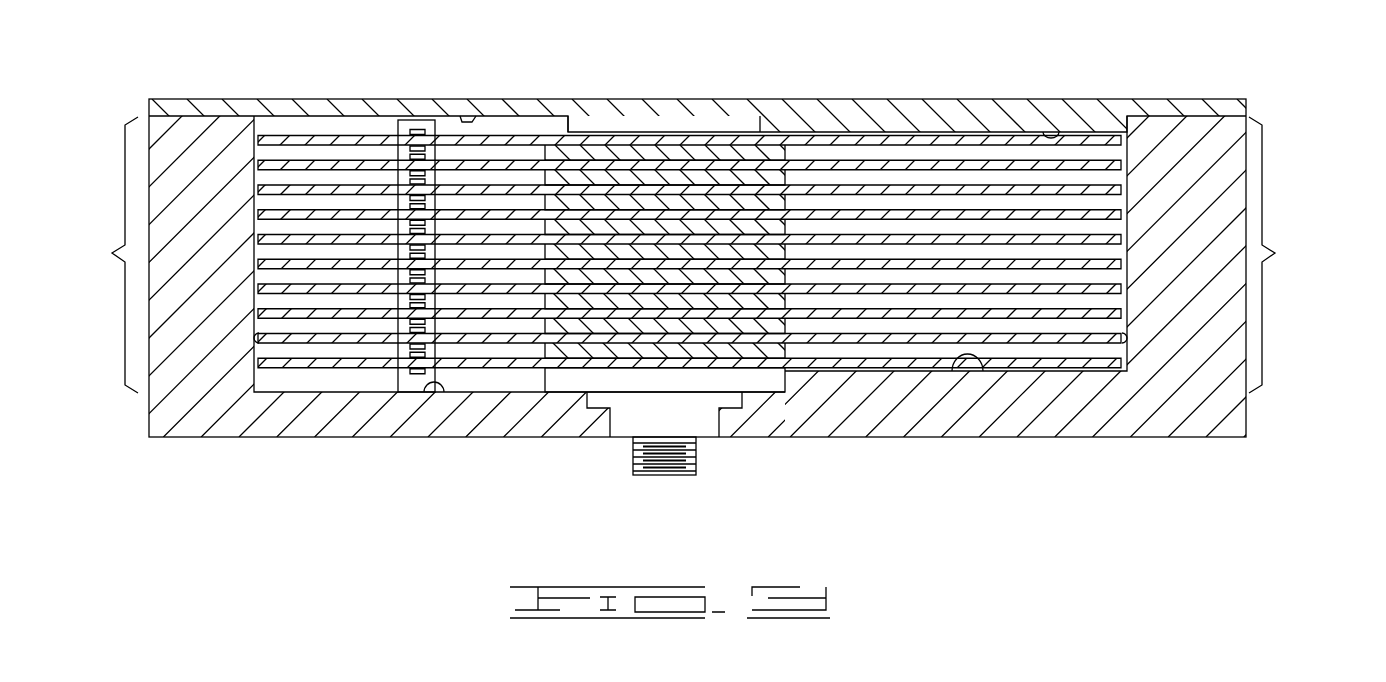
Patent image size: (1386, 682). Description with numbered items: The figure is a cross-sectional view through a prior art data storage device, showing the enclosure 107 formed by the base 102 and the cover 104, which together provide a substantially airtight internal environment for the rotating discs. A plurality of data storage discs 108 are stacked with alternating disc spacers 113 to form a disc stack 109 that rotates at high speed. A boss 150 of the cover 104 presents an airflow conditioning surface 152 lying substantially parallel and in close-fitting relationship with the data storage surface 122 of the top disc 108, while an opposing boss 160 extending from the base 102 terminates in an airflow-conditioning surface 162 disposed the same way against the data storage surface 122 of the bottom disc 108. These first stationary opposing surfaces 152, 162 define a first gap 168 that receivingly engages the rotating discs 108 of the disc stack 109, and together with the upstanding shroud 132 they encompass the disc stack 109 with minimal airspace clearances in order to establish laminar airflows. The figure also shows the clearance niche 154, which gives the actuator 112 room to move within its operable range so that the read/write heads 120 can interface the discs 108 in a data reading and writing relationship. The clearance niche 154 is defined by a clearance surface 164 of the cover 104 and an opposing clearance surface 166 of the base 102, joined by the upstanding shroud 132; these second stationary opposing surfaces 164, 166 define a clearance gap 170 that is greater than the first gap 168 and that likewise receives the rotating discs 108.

The base 102 is at (763, 438).
The cover 104 is at (688, 99).
The enclosure 107 is at (147, 101).
The data storage disc 108 is at (567, 235).
The disc stack 109 is at (238, 245).
The actuator 112 is at (392, 286).
The disc spacer 113 is at (542, 350).
The read/write head 120 is at (397, 146).
The data storage surface 122 is at (930, 134).
The upstanding shroud 132 is at (258, 343).
The boss 150 is at (818, 113).
The airflow conditioning surface 152 is at (1055, 133).
The clearance niche 154 is at (310, 122).
The boss 160 is at (857, 372).
The airflow-conditioning surface 162 is at (967, 370).
The clearance surface 164 is at (465, 116).
The clearance surface 166 is at (433, 393).
The first gap 168 is at (1275, 253).
The clearance gap 170 is at (112, 253).